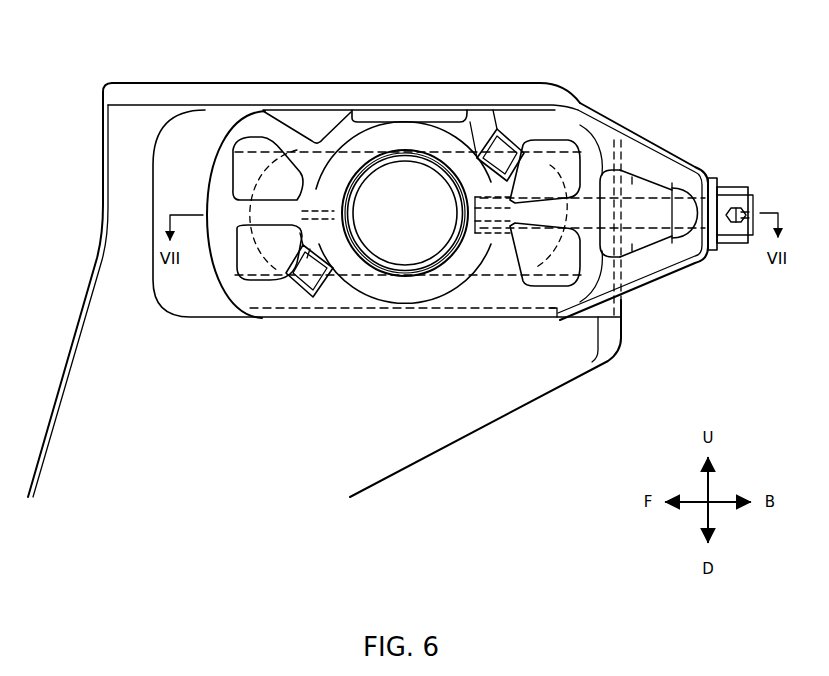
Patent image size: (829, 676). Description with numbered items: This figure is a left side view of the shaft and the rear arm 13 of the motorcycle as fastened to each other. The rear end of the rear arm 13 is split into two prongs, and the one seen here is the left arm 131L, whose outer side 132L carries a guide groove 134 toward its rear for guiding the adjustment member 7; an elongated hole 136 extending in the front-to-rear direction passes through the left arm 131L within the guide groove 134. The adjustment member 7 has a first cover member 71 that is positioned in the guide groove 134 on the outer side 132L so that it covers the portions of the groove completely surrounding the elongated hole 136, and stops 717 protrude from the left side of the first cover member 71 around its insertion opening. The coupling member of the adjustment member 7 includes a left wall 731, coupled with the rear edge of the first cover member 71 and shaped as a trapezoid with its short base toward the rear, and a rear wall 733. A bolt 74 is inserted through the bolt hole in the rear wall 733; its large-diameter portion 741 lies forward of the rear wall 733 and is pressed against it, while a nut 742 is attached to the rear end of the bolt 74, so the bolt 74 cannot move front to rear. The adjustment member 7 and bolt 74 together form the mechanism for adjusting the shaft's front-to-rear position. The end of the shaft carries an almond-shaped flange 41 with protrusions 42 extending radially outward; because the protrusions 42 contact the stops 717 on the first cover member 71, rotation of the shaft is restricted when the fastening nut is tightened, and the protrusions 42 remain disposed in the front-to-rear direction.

The rear arm 13 is at (322, 262).
The left arm 131L is at (260, 84).
The outer side 132L is at (117, 225).
The guide groove 134 is at (162, 288).
The elongated hole 136 is at (277, 252).
The adjustment member 7 is at (469, 203).
The first cover member 71 is at (383, 105).
The stops 717 is at (493, 133).
The protrusions 42 is at (300, 183).
The flange 41 is at (402, 291).
The left wall 731 is at (637, 152).
The rear wall 733 is at (703, 167).
The bolt 74 is at (630, 188).
The large-diameter portion 741 is at (667, 240).
The nut 742 is at (730, 180).